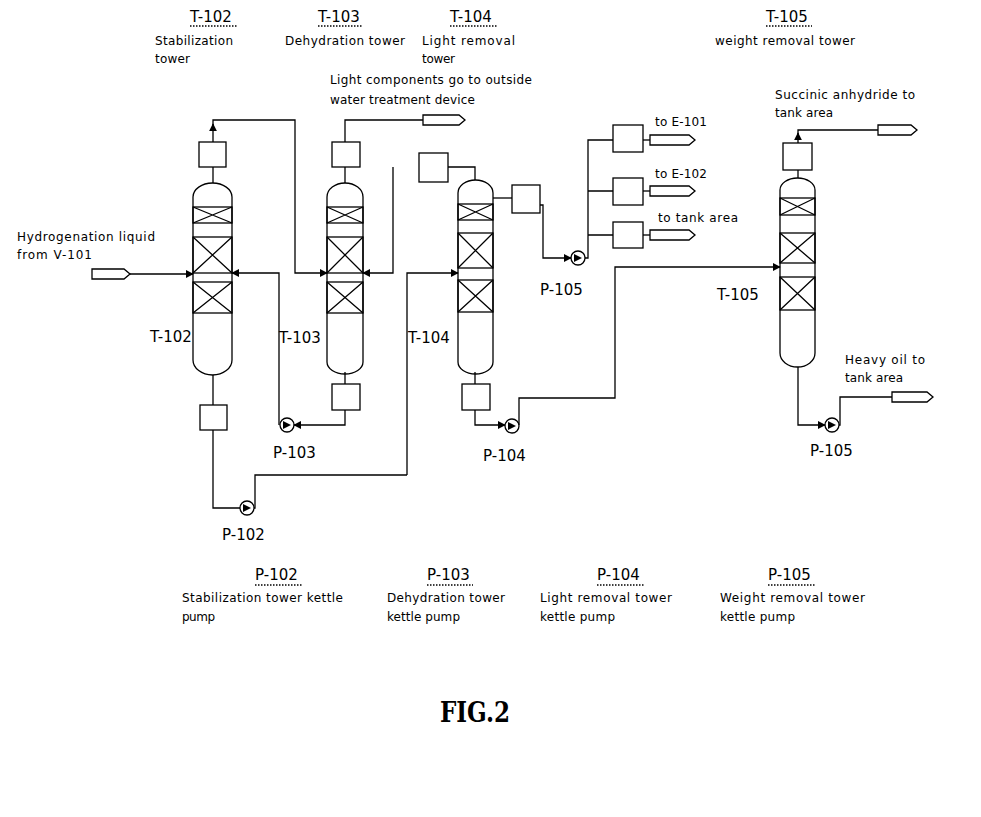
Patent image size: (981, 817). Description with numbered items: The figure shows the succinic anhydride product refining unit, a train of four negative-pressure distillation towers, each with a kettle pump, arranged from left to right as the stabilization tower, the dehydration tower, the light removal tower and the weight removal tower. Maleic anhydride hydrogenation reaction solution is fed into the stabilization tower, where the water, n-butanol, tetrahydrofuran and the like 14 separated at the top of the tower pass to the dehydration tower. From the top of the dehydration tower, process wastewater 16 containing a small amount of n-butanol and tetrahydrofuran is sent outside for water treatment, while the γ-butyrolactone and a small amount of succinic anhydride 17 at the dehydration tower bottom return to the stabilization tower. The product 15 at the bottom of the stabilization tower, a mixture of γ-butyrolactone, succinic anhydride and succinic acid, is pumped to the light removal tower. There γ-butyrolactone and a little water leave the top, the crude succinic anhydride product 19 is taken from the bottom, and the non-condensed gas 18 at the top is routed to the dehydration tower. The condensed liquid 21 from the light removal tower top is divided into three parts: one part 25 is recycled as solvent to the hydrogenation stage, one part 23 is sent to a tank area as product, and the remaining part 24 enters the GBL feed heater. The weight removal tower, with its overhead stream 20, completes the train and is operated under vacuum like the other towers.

The water, n-butanol, tetrahydrofuran and the like 14 is at (212, 162).
The product at the bottom of the stabilization tower 15 is at (213, 402).
The process wastewater 16 is at (346, 162).
The γ-butyrolactone and a small amount of succinic anhydride 17 is at (346, 391).
The non-condensed gas 18 is at (447, 167).
The crude succinic anhydride product 19 is at (476, 391).
The weight removal tower overhead condenser 20 is at (797, 160).
The condensed liquid 21 is at (516, 199).
The part sent to a tank area 23 is at (631, 235).
The remaining part 24 is at (631, 191).
The part recycled as solvent 25 is at (631, 138).